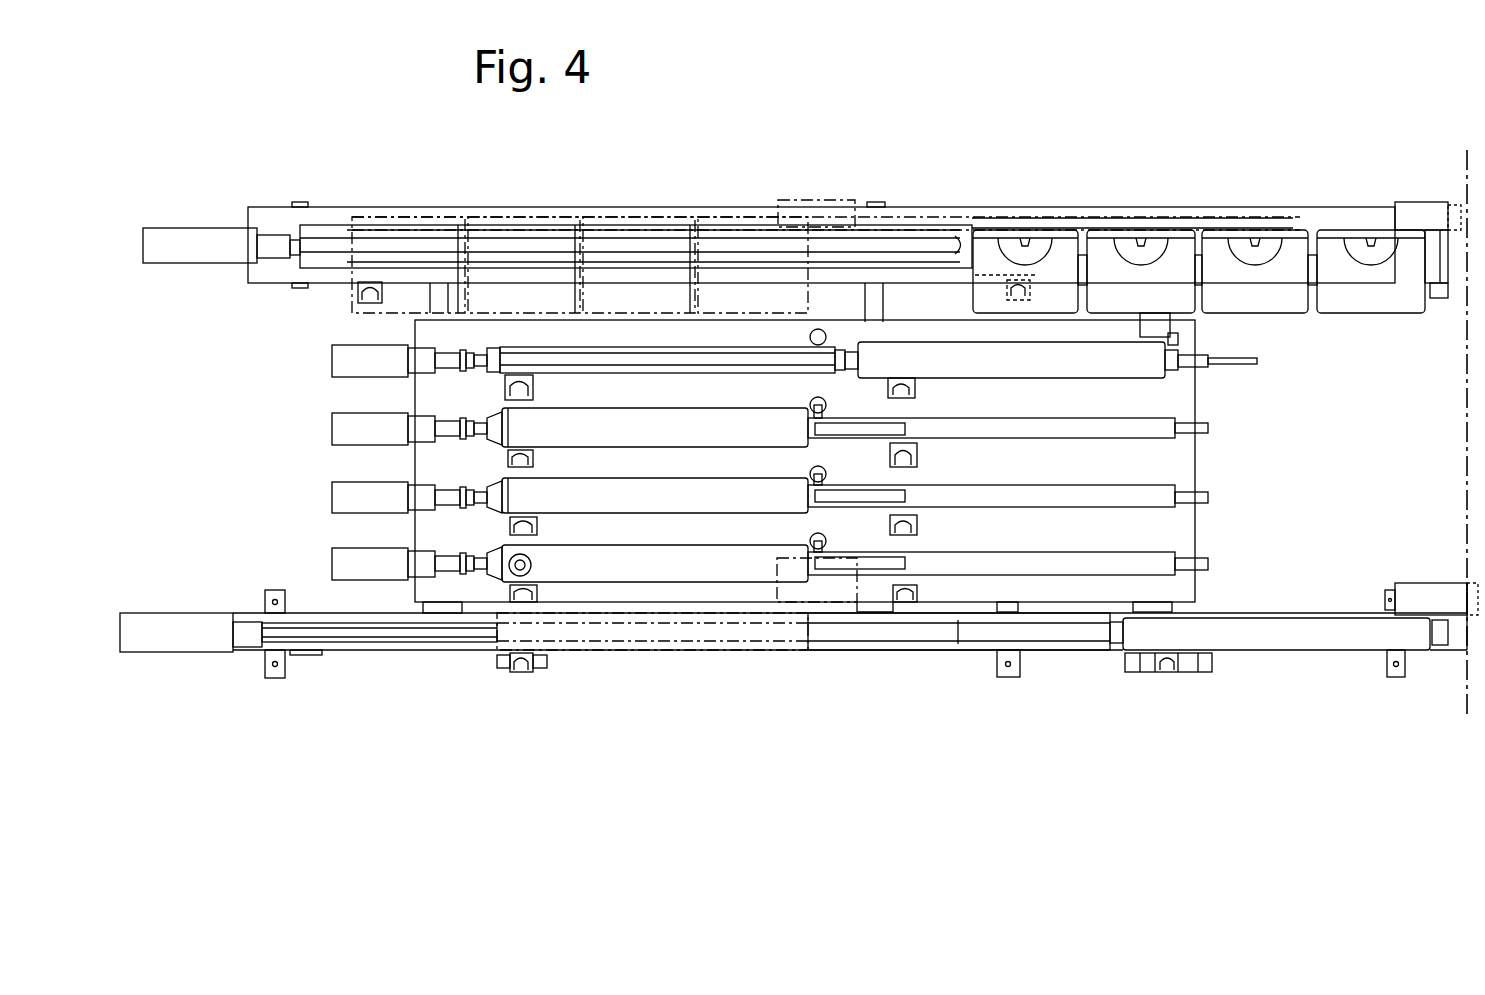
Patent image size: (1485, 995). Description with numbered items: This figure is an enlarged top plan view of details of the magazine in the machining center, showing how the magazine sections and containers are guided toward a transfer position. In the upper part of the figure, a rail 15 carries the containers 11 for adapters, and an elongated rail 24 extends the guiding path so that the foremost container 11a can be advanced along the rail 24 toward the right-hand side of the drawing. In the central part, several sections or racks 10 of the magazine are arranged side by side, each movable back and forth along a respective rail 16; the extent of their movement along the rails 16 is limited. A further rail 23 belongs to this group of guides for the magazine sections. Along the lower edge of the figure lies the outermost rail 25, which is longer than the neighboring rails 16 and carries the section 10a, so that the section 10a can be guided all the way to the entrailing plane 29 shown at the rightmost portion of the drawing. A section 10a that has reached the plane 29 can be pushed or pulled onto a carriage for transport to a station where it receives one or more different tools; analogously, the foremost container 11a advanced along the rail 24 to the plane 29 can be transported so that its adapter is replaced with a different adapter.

The rail 15 is at (480, 240).
The containers 11 is at (1243, 248).
The container 11a is at (1362, 248).
The elongated rail 24 is at (1436, 262).
The magazine sections 10 is at (958, 360).
The rails 16 is at (1170, 560).
The entrailing plane 29 is at (1462, 455).
The rail 23 is at (1092, 632).
The magazine section 10a is at (1280, 633).
The outermost rail 25 is at (1445, 635).